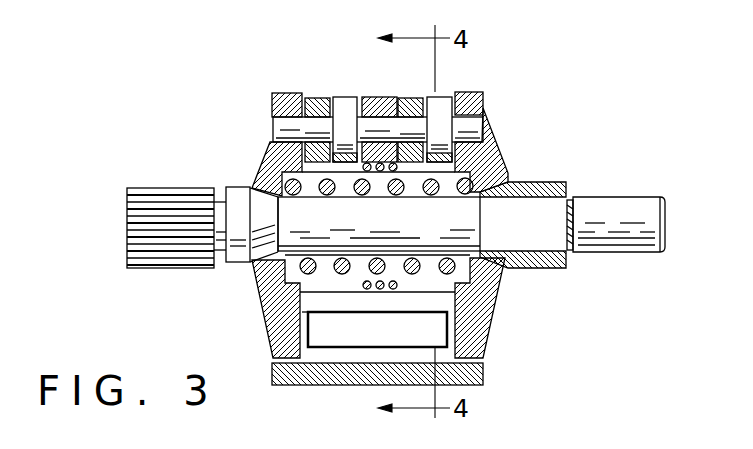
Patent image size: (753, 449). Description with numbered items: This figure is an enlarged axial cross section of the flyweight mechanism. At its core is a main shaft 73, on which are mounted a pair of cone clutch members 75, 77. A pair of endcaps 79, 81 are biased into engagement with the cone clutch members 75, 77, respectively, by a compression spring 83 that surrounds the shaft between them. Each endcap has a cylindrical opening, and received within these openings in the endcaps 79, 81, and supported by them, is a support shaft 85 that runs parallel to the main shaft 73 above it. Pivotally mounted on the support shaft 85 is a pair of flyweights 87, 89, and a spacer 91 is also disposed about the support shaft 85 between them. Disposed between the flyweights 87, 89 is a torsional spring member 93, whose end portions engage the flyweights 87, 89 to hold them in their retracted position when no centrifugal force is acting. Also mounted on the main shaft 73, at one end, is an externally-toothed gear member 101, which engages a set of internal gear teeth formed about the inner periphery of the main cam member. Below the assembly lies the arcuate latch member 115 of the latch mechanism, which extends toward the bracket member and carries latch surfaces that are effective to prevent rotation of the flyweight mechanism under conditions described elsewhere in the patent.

The externally-toothed gear member 101 is at (148, 188).
The cone clutch member 75 is at (233, 265).
The endcap 79 is at (268, 160).
The endcap 81 is at (487, 160).
The support shaft 85 is at (285, 130).
The flyweight 87 is at (320, 102).
The flyweight 89 is at (348, 107).
The spacer 91 is at (380, 112).
The compression spring 83 is at (402, 190).
The cone clutch member 77 is at (550, 180).
The main shaft 73 is at (622, 217).
The torsional spring member 93 is at (373, 293).
The latch member 115 is at (483, 370).